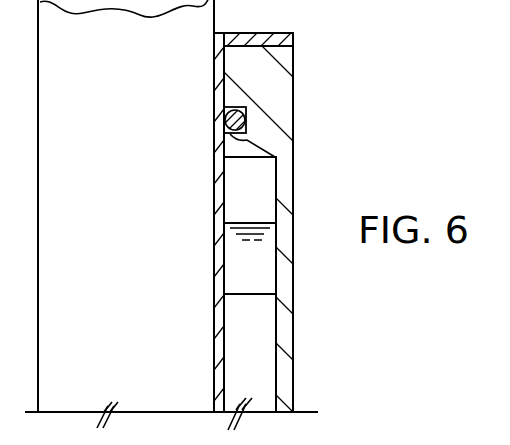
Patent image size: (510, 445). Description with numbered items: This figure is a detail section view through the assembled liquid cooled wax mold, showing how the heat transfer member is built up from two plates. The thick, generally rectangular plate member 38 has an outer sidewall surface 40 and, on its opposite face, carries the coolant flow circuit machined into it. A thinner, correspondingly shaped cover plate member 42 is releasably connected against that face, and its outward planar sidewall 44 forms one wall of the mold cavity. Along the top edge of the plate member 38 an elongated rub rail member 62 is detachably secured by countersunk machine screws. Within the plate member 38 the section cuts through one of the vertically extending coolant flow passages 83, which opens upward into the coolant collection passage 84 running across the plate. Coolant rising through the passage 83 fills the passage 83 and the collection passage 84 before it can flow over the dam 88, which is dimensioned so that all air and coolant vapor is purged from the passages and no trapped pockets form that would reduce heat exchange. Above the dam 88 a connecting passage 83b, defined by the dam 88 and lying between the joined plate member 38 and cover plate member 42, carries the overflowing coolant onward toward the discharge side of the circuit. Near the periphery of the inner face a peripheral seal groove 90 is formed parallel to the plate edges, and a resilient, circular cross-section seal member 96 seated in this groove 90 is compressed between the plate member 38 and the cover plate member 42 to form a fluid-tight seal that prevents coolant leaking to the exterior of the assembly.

The plate member 38 is at (283, 108).
The outer sidewall surface 40 is at (293, 87).
The cover plate member 42 is at (220, 68).
The sidewall 44 is at (213, 364).
The rub rail member 62 is at (275, 33).
The coolant flow passage 83 is at (253, 338).
The connecting passage 83b is at (255, 174).
The coolant collection passage 84 is at (257, 272).
The dam 88 is at (250, 222).
The peripheral seal groove 90 is at (258, 145).
The seal member 96 is at (226, 128).